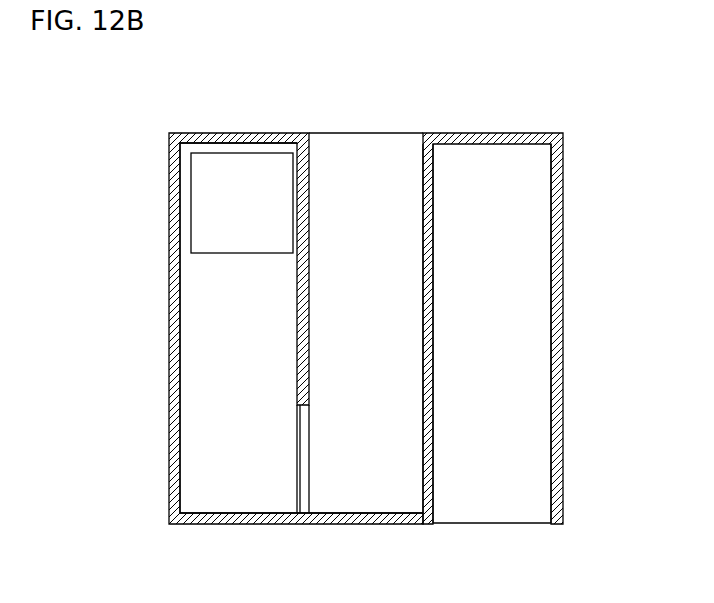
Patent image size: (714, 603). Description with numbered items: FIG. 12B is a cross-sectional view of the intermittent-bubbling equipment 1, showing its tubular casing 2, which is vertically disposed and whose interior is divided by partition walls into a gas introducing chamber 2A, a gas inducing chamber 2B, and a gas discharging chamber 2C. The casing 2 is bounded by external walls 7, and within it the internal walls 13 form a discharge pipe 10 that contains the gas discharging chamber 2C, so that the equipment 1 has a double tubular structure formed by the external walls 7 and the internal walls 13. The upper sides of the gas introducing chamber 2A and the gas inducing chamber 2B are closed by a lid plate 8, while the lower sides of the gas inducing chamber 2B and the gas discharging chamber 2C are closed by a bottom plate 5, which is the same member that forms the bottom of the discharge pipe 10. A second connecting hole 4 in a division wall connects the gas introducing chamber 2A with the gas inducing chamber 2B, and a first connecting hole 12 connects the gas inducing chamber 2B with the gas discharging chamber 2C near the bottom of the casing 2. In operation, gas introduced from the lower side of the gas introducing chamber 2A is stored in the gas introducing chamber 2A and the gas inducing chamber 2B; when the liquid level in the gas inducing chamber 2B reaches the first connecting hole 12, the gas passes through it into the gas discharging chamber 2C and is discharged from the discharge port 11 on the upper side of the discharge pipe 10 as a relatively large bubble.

The intermittent-bubbling equipment 1 is at (359, 292).
The casing 2 is at (563, 490).
The gas introducing chamber 2A is at (530, 434).
The gas inducing chamber 2B is at (192, 424).
The gas discharging chamber 2C is at (330, 488).
The second connecting hole 4 is at (222, 153).
The bottom plate 5 is at (350, 526).
The external walls 7 is at (170, 330).
The lid plate 8 is at (270, 140).
The discharge pipe 10 is at (433, 207).
The discharge port 11 is at (400, 132).
The first connecting hole 12 is at (302, 457).
The internal walls 13 is at (297, 387).